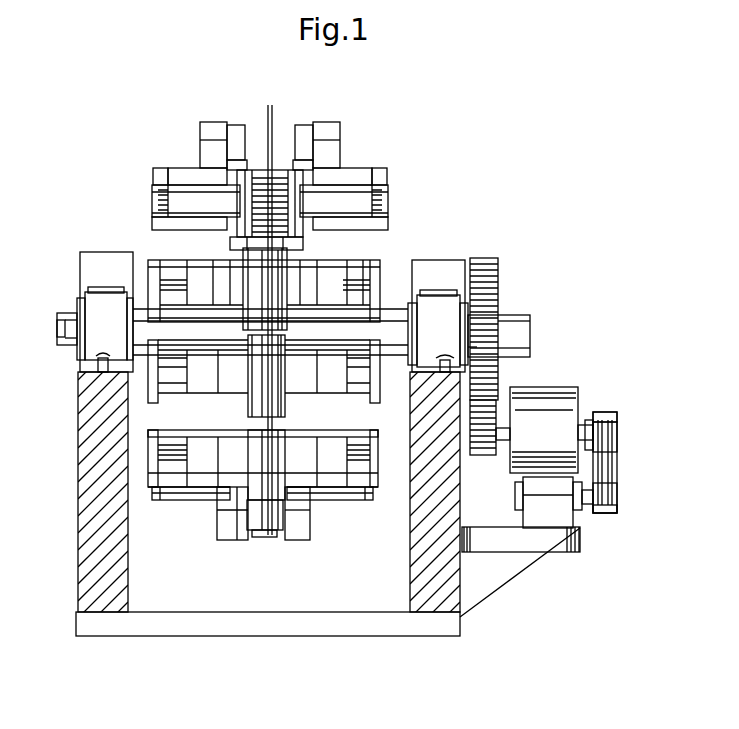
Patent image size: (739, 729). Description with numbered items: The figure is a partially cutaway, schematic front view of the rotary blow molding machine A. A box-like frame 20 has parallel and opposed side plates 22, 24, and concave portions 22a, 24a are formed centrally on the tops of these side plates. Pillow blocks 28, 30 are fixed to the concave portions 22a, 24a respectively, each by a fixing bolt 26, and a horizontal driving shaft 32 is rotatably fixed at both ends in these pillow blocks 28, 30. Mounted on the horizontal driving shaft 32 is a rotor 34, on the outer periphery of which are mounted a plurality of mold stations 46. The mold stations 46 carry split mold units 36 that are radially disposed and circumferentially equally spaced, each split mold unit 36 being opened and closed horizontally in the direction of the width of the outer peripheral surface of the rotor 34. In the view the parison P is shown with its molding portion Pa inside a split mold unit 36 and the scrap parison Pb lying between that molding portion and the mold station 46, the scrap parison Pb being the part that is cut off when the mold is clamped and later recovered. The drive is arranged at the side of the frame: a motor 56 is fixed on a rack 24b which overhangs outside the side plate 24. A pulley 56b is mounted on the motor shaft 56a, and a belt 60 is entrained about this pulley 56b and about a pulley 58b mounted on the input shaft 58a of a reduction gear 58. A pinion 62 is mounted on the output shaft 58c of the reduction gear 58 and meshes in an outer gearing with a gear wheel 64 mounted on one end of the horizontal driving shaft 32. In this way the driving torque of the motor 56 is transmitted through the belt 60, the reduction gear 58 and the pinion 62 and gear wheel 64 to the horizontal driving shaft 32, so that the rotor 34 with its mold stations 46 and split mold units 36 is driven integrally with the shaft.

The rotary blow molding machine A is at (409, 111).
The box-like frame 20 is at (95, 502).
The side plate 22 is at (100, 475).
The concave portion 22a is at (85, 270).
The side plate 24 is at (437, 563).
The concave portion 24a is at (438, 270).
The rack 24b is at (523, 542).
The fixing bolt 26 is at (95, 370).
The pillow block 28 is at (106, 295).
The pillow block 30 is at (440, 328).
The horizontal driving shaft 32 is at (392, 330).
The rotor 34 is at (297, 330).
The split mold unit 36 is at (292, 105).
The mold station 46 is at (150, 125).
The motor 56 is at (548, 500).
The motor shaft 56a is at (580, 515).
The pulley 56b is at (618, 500).
The reduction gear 58 is at (543, 407).
The input shaft 58a is at (582, 425).
The pulley 58b is at (617, 428).
The output shaft 58c is at (505, 432).
The belt 60 is at (612, 465).
The pinion 62 is at (482, 438).
The gear wheel 64 is at (490, 278).
The parison P is at (270, 148).
The parison Pa is at (268, 285).
The scrap parison Pb is at (267, 417).